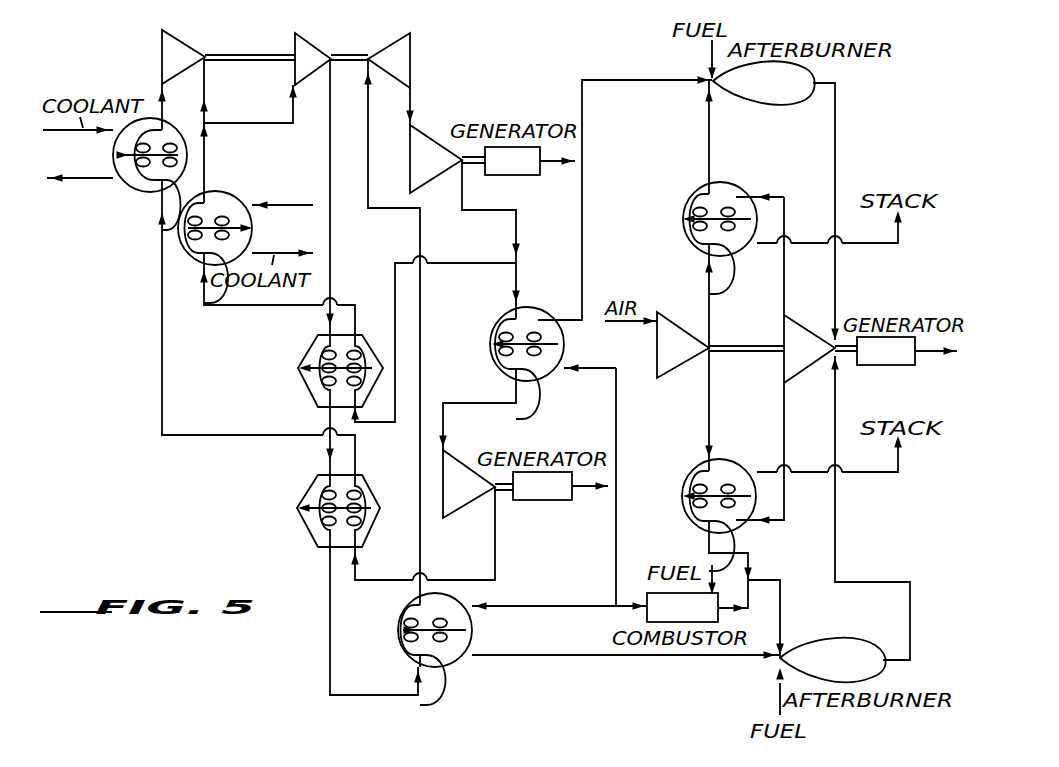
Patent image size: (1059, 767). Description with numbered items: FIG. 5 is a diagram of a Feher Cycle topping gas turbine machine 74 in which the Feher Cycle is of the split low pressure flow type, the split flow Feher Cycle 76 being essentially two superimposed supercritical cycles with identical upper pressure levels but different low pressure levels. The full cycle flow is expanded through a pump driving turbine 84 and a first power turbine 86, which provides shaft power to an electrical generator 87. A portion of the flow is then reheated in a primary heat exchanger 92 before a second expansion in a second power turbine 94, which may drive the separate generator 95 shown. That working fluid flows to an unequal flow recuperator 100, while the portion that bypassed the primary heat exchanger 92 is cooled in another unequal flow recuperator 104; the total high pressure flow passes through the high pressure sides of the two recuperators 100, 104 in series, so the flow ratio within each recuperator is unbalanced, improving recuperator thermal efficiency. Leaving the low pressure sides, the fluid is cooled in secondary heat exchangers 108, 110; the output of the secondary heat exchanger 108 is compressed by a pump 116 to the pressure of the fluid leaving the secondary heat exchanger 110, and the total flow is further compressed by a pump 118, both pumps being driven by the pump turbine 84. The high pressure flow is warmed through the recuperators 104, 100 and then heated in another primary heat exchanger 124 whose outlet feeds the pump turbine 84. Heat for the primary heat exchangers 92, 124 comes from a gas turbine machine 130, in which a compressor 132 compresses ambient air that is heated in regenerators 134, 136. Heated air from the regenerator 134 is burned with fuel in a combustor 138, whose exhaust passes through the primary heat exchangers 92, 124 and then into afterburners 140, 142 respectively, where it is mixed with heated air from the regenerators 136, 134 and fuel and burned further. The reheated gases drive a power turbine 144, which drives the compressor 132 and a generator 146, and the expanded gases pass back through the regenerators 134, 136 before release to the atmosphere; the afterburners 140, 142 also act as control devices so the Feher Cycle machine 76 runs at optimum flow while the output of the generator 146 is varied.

The Feher Cycle topping gas turbine machine 74 is at (521, 72).
The split flow Feher Cycle 76 is at (110, 328).
The pump driving turbine 84 is at (374, 48).
The first power turbine 86 is at (437, 180).
The electrical generator 87 is at (527, 176).
The primary heat exchanger 92 is at (491, 358).
The second power turbine 94 is at (472, 505).
The separate generator 95 is at (549, 501).
The unequal flow recuperator 100 is at (310, 476).
The unequal flow recuperator 104 is at (312, 349).
The secondary heat exchanger 108 is at (128, 190).
The secondary heat exchanger 110 is at (237, 195).
The pump 116 is at (188, 47).
The pump 118 is at (316, 46).
The primary heat exchanger 124 is at (450, 664).
The gas turbine machine 130 is at (636, 70).
The compressor 132 is at (672, 380).
The regenerator 134 is at (688, 512).
The regenerator 136 is at (686, 206).
The combustor 138 is at (646, 600).
The afterburner 140 is at (762, 106).
The afterburner 142 is at (846, 637).
The power turbine 144 is at (805, 378).
The generator 146 is at (887, 366).